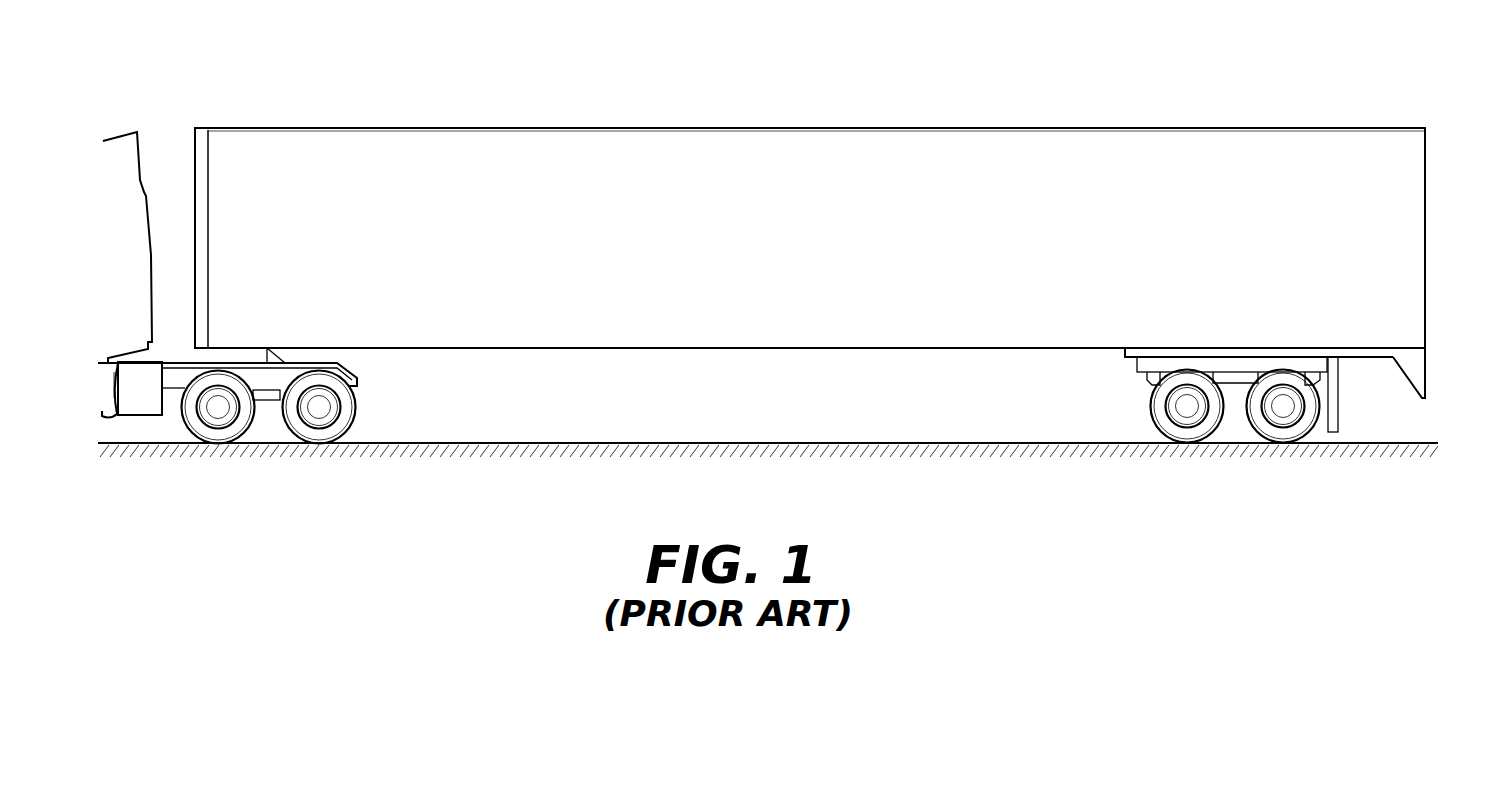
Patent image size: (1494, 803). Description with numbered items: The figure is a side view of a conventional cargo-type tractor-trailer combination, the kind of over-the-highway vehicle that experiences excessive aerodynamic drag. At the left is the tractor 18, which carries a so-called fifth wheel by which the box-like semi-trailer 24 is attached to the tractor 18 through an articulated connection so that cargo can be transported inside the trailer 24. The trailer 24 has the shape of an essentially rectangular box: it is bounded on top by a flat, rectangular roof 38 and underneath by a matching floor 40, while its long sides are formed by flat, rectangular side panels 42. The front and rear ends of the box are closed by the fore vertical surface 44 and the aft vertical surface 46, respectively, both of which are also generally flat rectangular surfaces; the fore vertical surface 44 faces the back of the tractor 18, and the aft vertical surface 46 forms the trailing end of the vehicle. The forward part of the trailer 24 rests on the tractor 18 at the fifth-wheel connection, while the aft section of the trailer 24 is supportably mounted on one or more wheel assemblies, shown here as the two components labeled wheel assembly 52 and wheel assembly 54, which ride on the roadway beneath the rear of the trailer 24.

The tractor 18 is at (118, 141).
The semi-trailer 24 is at (282, 114).
The roof 38 is at (522, 128).
The floor 40 is at (533, 349).
The side panels 42 is at (1130, 147).
The fore vertical surface 44 is at (195, 250).
The aft vertical surface 46 is at (1427, 232).
The wheel assembly 52 is at (1163, 430).
The wheel assembly 54 is at (1318, 428).